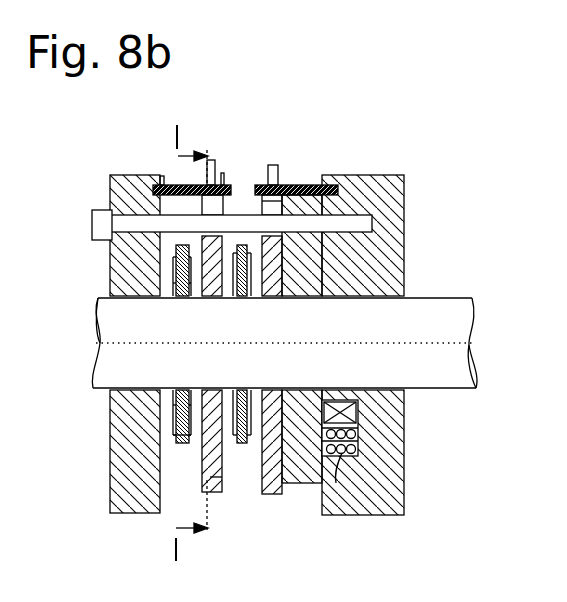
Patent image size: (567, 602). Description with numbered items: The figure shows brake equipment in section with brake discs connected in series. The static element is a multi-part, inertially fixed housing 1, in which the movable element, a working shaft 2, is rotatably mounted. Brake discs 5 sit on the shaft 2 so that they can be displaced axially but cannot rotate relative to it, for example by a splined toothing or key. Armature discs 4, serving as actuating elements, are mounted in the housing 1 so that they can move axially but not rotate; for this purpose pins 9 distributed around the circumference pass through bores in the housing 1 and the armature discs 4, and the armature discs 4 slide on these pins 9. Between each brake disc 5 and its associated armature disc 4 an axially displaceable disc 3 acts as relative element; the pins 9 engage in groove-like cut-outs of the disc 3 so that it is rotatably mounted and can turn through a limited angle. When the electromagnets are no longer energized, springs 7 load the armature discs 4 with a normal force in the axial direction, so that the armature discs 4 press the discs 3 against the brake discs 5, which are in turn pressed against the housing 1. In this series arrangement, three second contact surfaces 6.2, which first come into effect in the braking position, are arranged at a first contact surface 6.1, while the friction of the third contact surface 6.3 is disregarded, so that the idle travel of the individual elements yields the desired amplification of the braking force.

The housing 1 is at (146, 278).
The working shaft 2 is at (412, 338).
The disc 3 is at (211, 482).
The armature disc 4 is at (312, 442).
The brake disc 5 is at (184, 447).
The first contact surface 6.1 is at (167, 424).
The second contact surface 6.2 is at (198, 272).
The third contact surface 6.3 is at (284, 465).
The spring 7 is at (371, 515).
The pin 9 is at (110, 230).